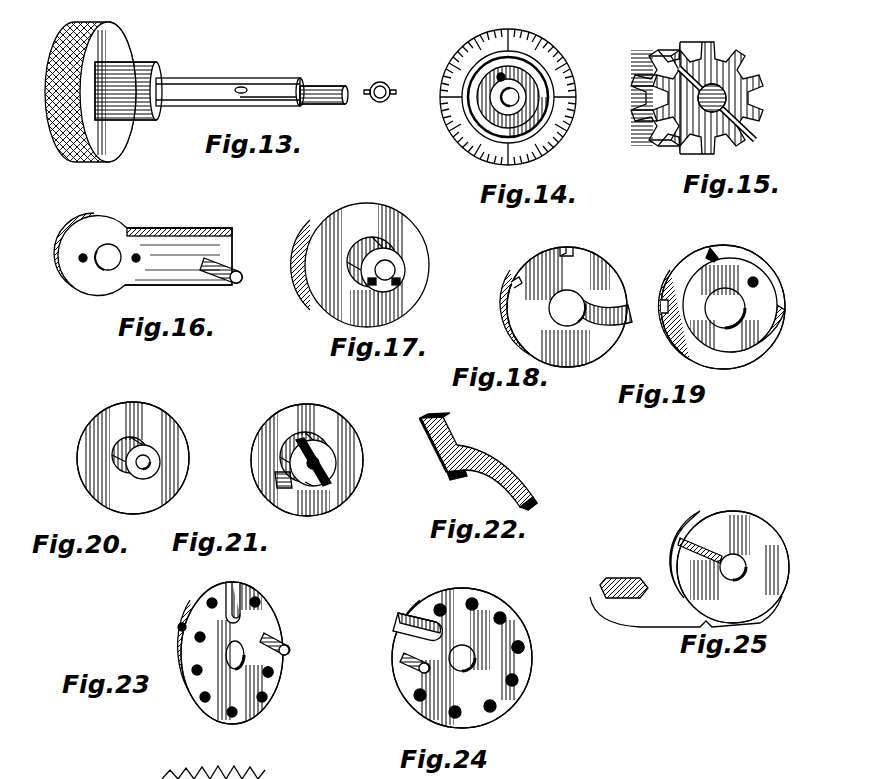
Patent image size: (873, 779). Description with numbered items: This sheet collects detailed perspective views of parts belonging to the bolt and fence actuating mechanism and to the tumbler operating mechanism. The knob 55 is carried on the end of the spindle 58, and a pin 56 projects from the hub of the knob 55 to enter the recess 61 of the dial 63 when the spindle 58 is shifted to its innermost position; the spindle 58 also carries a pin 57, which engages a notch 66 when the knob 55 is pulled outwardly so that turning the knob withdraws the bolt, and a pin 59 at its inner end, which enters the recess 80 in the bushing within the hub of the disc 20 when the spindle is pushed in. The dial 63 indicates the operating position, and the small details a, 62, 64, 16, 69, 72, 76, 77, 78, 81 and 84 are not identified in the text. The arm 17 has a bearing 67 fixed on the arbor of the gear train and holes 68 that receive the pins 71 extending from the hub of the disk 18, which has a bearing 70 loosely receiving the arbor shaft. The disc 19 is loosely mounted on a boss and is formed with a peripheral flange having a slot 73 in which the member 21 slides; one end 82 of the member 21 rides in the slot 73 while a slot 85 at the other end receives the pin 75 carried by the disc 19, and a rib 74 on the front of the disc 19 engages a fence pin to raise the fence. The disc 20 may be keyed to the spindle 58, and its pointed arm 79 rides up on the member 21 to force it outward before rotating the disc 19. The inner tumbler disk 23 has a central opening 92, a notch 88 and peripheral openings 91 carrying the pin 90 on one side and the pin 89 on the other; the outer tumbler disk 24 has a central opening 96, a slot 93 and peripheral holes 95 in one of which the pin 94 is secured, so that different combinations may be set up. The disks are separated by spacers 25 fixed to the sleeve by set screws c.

In FIG. 13, the knob 55 is at (128, 128).
In FIG. 13, the pin 56 is at (160, 70).
In FIG. 13, the pin 57 is at (239, 87).
In FIG. 13, the spindle 58 is at (259, 83).
In FIG. 13, the pin 59 is at (297, 84).
In FIG. 13, the ring detail a is at (380, 104).
In FIG. 14, the recess 61 is at (486, 75).
In FIG. 14, the dial bore 62 is at (494, 112).
In FIG. 14, the dial 63 is at (556, 49).
In FIG. 14, the dial bezel ring 64 is at (549, 100).
In FIG. 15, the gear 16 is at (735, 72).
In FIG. 15, the notch 66 is at (757, 113).
In FIG. 16, the arm 17 is at (165, 250).
In FIG. 16, the bearing 67 is at (105, 265).
In FIG. 16, the holes 68 is at (138, 262).
In FIG. 16, the arm pin 69 is at (244, 271).
In FIG. 17, the disk 18 is at (390, 232).
In FIG. 17, the bearing 70 is at (395, 266).
In FIG. 17, the pins 71 is at (400, 281).
In FIG. 18, the disc 19 is at (606, 286).
In FIG. 18, the side notch 72 is at (516, 278).
In FIG. 18, the slot 73 is at (566, 250).
In FIG. 19, the slot 73 is at (708, 256).
In FIG. 18, the rib 74 is at (664, 303).
In FIG. 19, the rib 74 is at (664, 306).
In FIG. 19, the pin 75 is at (757, 279).
In FIG. 19, the ring bore 76 is at (730, 312).
In FIG. 20, the disc 20 is at (172, 438).
In FIG. 21, the disc 20 is at (307, 460).
In FIG. 20, the hub bore 77 is at (138, 468).
In FIG. 20, the hub 78 is at (156, 461).
In FIG. 21, the pointed arm 79 is at (282, 486).
In FIG. 21, the recess 80 is at (314, 453).
In FIG. 21, the hub bore 81 is at (331, 462).
In FIG. 22, the member 21 is at (496, 463).
In FIG. 22, the end 82 is at (448, 434).
In FIG. 22, the pawl heel 84 is at (464, 473).
In FIG. 22, the slot 85 is at (531, 503).
In FIG. 23, the inner tumbler disk 23 is at (266, 627).
In FIG. 23, the notch 88 is at (233, 603).
In FIG. 23, the pin 89 is at (178, 626).
In FIG. 23, the pin 90 is at (290, 646).
In FIG. 23, the openings 91 is at (273, 675).
In FIG. 23, the central opening 92 is at (244, 668).
In FIG. 24, the outer tumbler disk 24 is at (486, 620).
In FIG. 24, the slot 93 is at (406, 627).
In FIG. 24, the pin 94 is at (404, 664).
In FIG. 24, the holes 95 is at (524, 648).
In FIG. 24, the central opening 96 is at (466, 660).
In FIG. 25, the spacer 25 is at (676, 538).
In FIG. 25, the set screws c is at (624, 596).